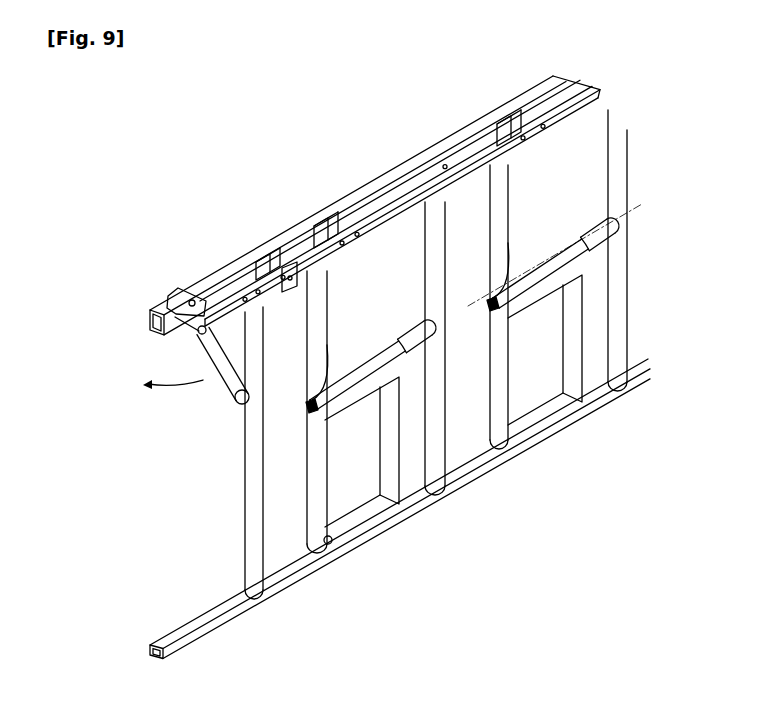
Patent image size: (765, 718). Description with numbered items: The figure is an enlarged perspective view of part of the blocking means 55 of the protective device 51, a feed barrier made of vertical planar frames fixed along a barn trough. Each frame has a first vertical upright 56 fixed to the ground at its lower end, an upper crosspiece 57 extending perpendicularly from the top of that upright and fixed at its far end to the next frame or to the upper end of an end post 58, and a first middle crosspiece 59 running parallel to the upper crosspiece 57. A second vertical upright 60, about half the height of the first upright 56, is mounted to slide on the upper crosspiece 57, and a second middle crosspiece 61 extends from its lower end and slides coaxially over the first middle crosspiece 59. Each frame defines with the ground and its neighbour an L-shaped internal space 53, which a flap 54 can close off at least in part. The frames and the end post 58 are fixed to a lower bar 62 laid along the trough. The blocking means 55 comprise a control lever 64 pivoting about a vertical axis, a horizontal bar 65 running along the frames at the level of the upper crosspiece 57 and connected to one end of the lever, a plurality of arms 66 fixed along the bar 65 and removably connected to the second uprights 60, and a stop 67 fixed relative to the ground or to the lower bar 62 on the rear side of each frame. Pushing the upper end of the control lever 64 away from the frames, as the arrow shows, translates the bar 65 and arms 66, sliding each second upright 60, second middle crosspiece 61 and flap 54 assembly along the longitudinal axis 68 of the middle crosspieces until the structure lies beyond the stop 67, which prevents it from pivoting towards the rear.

The protective device 51 is at (481, 536).
The L-shaped internal space 53 is at (265, 512).
The flap 54 is at (362, 528).
The blocking means 55 is at (107, 163).
The first vertical upright 56 is at (253, 457).
The upper crosspiece 57 is at (405, 167).
The end post 58 is at (620, 155).
The first middle crosspiece 59 is at (598, 240).
The second vertical upright 60 is at (330, 311).
The second middle crosspiece 61 is at (340, 382).
The lower bar 62 is at (171, 636).
The control lever 64 is at (213, 358).
The horizontal bar 65 is at (243, 258).
The arm 66 is at (316, 215).
The stop 67 is at (326, 537).
The longitudinal axis 68 is at (636, 207).